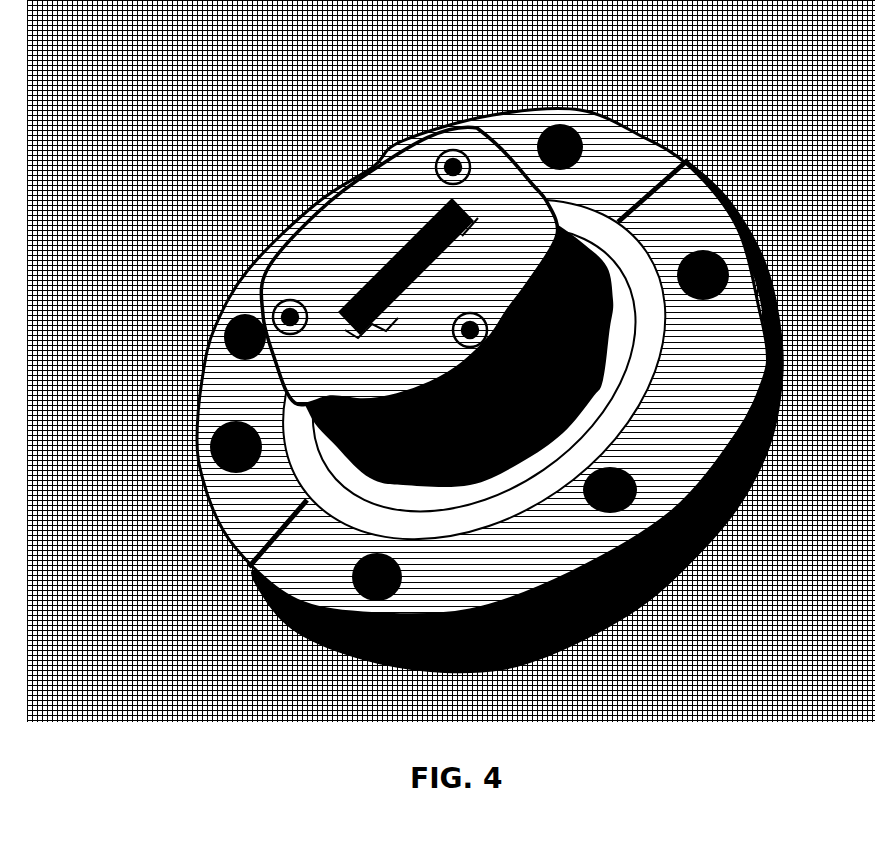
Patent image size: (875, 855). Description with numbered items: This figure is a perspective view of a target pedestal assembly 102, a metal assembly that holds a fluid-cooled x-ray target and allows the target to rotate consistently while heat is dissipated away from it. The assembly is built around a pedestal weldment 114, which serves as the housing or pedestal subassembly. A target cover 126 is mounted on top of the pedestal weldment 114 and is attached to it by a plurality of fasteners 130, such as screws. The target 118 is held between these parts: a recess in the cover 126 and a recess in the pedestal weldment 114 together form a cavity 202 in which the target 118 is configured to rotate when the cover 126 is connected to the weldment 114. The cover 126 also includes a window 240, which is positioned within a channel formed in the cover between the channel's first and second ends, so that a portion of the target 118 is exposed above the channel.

The target pedestal assembly 102 is at (733, 75).
The pedestal weldment 114 is at (240, 527).
The target cover 126 is at (305, 215).
The fasteners 130 is at (291, 336).
The target 118 is at (458, 240).
The cavity 202 is at (362, 320).
The window 240 is at (480, 224).